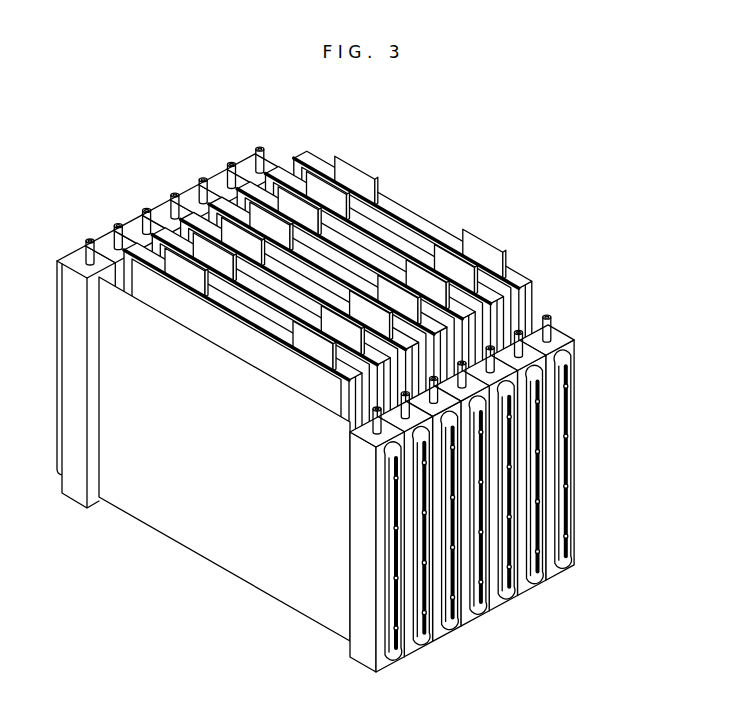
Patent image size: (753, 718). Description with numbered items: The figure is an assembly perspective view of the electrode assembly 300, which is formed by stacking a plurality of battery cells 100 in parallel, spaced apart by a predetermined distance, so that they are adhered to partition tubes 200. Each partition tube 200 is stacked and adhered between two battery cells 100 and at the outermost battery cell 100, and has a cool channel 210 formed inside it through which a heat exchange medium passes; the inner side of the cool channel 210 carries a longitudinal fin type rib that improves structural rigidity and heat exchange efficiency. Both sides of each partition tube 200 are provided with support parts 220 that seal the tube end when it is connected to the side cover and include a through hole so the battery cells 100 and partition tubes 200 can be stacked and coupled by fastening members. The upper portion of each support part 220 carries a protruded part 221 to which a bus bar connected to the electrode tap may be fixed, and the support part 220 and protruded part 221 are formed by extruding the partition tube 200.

The electrode assembly 300 is at (492, 155).
The battery cell 100 is at (510, 282).
The partition tube 200 is at (562, 364).
The cool channel 210 is at (570, 402).
The support part 220 is at (570, 333).
The protruded part 221 is at (549, 313).